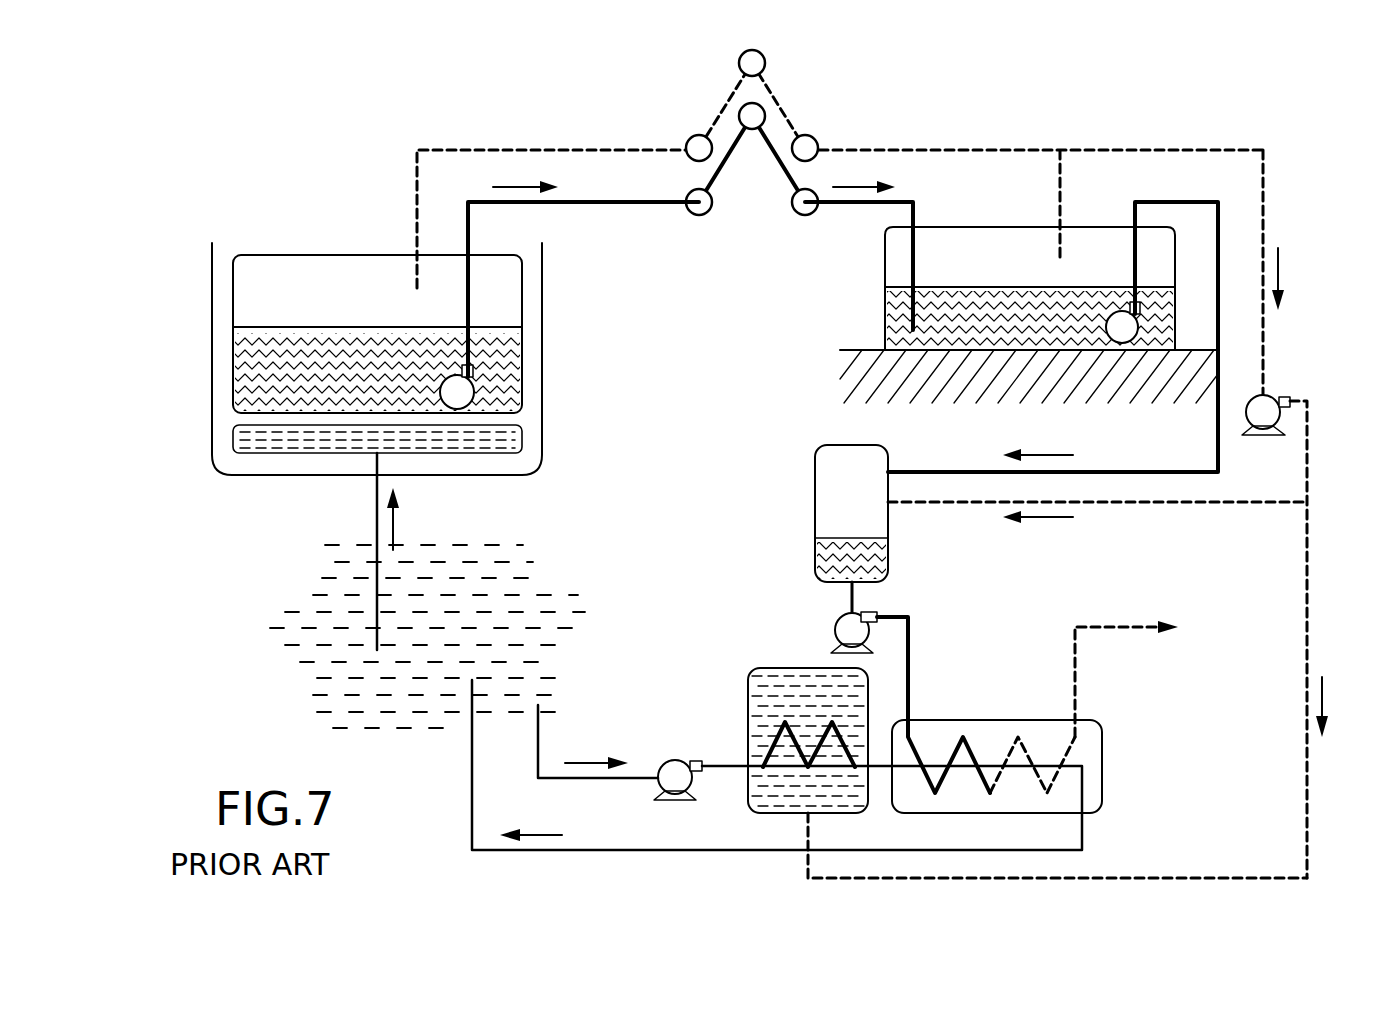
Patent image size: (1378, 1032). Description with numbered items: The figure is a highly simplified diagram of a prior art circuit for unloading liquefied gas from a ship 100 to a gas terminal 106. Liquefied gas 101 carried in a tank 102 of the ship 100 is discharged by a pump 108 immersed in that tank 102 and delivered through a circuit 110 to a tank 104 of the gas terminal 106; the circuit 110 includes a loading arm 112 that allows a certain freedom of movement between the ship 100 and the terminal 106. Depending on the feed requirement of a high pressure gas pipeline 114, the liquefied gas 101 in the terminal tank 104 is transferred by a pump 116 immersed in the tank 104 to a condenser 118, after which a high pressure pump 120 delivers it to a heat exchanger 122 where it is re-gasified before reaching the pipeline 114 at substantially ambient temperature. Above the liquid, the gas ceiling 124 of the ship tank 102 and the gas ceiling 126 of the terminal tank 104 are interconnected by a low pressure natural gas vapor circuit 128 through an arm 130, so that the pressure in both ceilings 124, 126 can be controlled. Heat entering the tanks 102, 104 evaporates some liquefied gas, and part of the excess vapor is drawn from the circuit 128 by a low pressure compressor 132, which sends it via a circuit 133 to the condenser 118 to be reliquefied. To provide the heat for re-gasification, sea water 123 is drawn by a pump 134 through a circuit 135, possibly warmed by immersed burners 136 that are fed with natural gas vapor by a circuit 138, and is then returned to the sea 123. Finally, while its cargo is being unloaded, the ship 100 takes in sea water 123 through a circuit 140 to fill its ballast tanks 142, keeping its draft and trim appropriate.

The ship 100 is at (195, 385).
The liquefied gas 101 is at (362, 350).
The tank 102 is at (292, 245).
The tank 104 is at (885, 270).
The gas terminal 106 is at (1275, 210).
The pump 108 is at (458, 392).
The circuit 110 is at (590, 204).
The loading arm 112 is at (733, 152).
The gas pipeline 114 is at (1128, 627).
The pump 116 is at (1105, 310).
The condenser 118 is at (815, 495).
The high pressure pump 120 is at (840, 630).
The heat exchanger 122 is at (950, 720).
The sea water 123 is at (492, 597).
The gas ceiling 124 is at (385, 275).
The gas ceiling 126 is at (957, 235).
The low pressure natural gas vapor circuit 128 is at (565, 148).
The arm 130 is at (772, 92).
The low pressure compressor 132 is at (1270, 400).
The circuit 133 is at (1198, 505).
The pump 134 is at (678, 770).
The circuit 135 is at (572, 778).
The immersed burners 136 is at (740, 700).
The circuit 138 is at (1243, 878).
The circuit 140 is at (377, 520).
The ballast tanks 142 is at (462, 448).